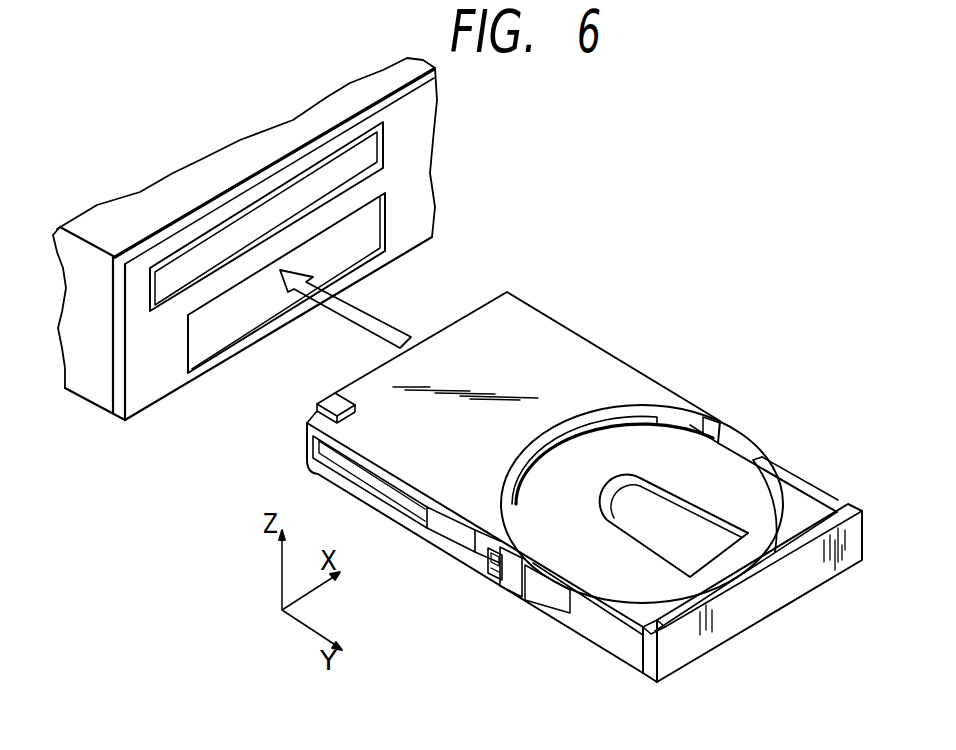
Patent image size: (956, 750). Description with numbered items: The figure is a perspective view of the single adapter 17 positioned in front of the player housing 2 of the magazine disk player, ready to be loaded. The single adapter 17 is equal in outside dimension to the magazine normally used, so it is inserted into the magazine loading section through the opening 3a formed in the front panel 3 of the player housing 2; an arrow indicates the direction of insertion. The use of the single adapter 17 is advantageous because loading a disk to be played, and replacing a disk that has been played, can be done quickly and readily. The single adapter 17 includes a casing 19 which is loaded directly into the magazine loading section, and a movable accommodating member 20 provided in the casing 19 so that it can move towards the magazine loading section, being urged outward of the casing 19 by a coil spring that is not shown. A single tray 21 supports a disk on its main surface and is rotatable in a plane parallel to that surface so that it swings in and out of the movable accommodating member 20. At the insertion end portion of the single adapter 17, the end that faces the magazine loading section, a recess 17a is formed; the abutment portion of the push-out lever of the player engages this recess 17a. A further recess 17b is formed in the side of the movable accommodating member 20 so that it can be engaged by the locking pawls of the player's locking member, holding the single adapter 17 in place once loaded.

The player housing 2 is at (92, 410).
The front panel 3 is at (405, 237).
The opening 3a is at (205, 343).
The single adapter 17 is at (572, 498).
The recess 17a is at (328, 420).
The recess 17b is at (490, 572).
The casing 19 is at (565, 342).
The movable accommodating member 20 is at (632, 647).
The single tray 21 is at (587, 613).